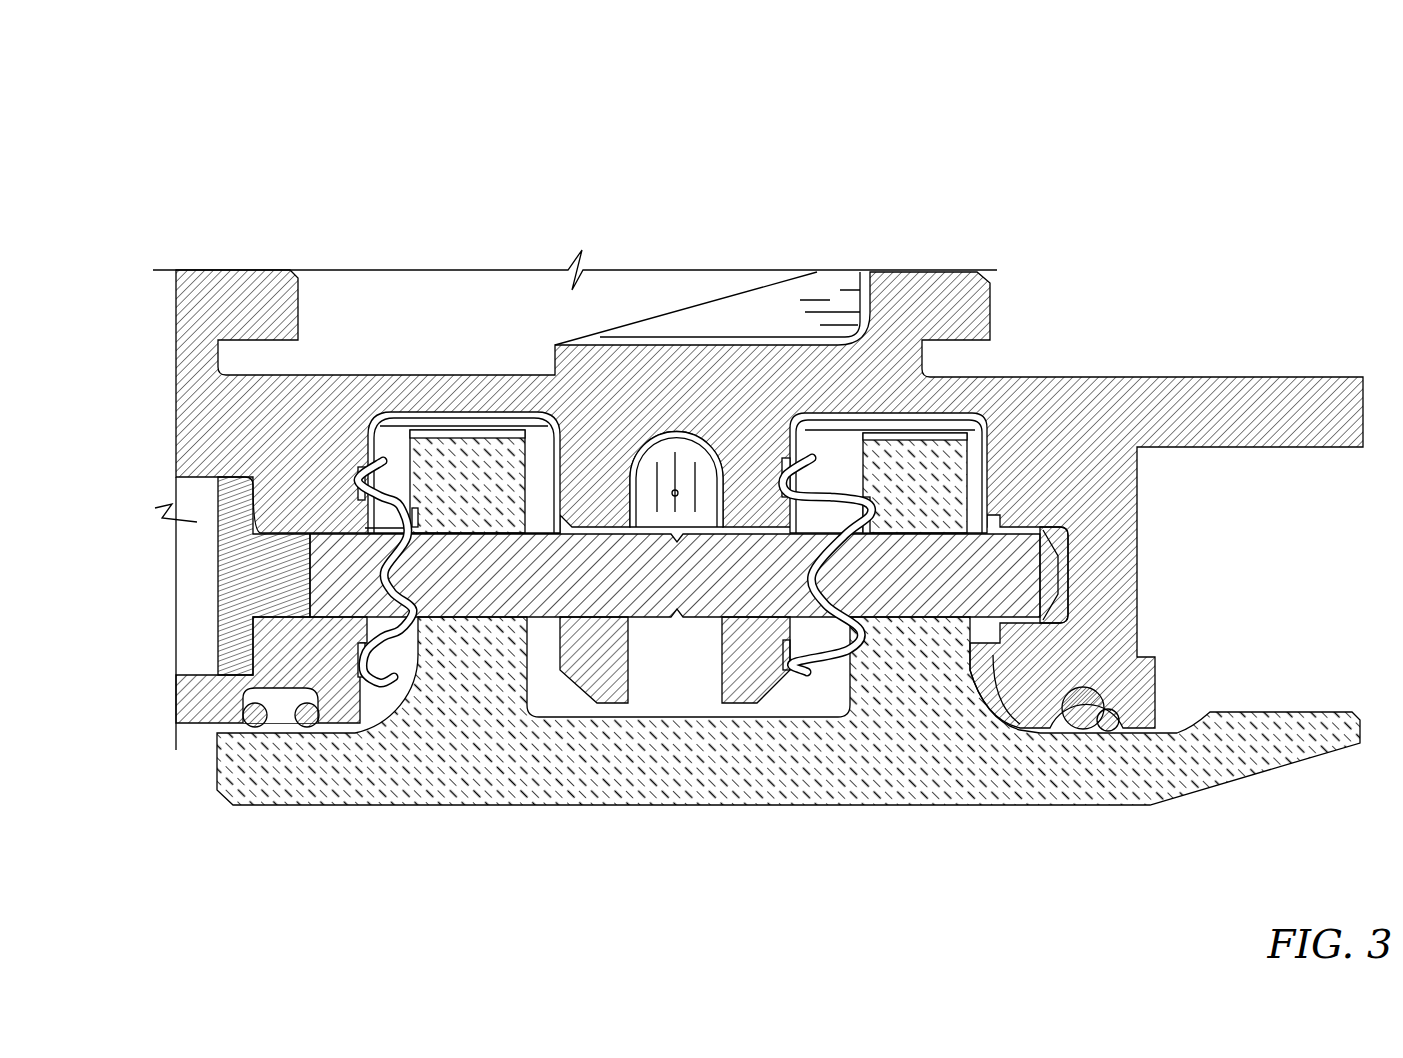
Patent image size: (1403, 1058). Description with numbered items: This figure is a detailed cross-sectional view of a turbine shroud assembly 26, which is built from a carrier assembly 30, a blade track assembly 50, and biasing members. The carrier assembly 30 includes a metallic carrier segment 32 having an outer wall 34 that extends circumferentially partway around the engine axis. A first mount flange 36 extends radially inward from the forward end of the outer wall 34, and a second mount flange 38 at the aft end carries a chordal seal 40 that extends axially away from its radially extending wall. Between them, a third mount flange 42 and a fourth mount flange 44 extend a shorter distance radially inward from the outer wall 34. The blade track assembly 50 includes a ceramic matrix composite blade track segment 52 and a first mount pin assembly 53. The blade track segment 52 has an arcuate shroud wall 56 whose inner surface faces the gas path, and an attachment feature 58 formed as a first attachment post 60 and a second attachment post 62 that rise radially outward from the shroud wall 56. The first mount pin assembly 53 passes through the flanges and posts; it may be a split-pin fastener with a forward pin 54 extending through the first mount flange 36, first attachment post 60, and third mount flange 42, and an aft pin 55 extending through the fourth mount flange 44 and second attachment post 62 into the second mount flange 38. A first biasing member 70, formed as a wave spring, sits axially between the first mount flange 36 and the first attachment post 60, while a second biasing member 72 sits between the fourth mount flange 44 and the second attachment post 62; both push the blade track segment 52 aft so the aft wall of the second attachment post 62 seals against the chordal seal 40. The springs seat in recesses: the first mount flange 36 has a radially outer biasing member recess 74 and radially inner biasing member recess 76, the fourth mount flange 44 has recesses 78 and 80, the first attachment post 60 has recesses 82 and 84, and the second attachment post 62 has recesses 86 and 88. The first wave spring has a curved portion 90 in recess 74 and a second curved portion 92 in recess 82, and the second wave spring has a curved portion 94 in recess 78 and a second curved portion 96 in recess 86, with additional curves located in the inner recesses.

The turbine shroud assembly 26 is at (252, 156).
The carrier assembly 30 is at (1278, 352).
The carrier segment 32 is at (554, 325).
The outer wall 34 is at (215, 398).
The first mount flange 36 is at (280, 510).
The second mount flange 38 is at (1115, 537).
The chordal seal 40 is at (968, 665).
The third mount flange 42 is at (610, 676).
The fourth mount flange 44 is at (770, 675).
The blade track assembly 50 is at (210, 802).
The blade track segment 52 is at (700, 815).
The first mount pin assembly 53 is at (1035, 578).
The forward pin 54 is at (437, 592).
The aft pin 55 is at (872, 592).
The shroud wall 56 is at (533, 772).
The attachment feature 58 is at (417, 693).
The first attachment post 60 is at (945, 480).
The second attachment post 62 is at (425, 523).
The first biasing member 70 is at (805, 455).
The second biasing member 72 is at (378, 432).
The radially outer biasing member recess 74 is at (360, 467).
The radially inner biasing member recess 76 is at (400, 653).
The radially outer biasing member recess 78 is at (775, 452).
The radially inner biasing member recess 80 is at (252, 565).
The radially outer biasing member recess 82 is at (525, 520).
The radially inner biasing member recess 84 is at (466, 640).
The radially outer biasing member recess 86 is at (875, 506).
The radially inner biasing member recess 88 is at (866, 645).
The curved portion 90 is at (350, 497).
The second curved portion 92 is at (518, 440).
The curved portion 94 is at (770, 435).
The second curved portion 96 is at (950, 472).